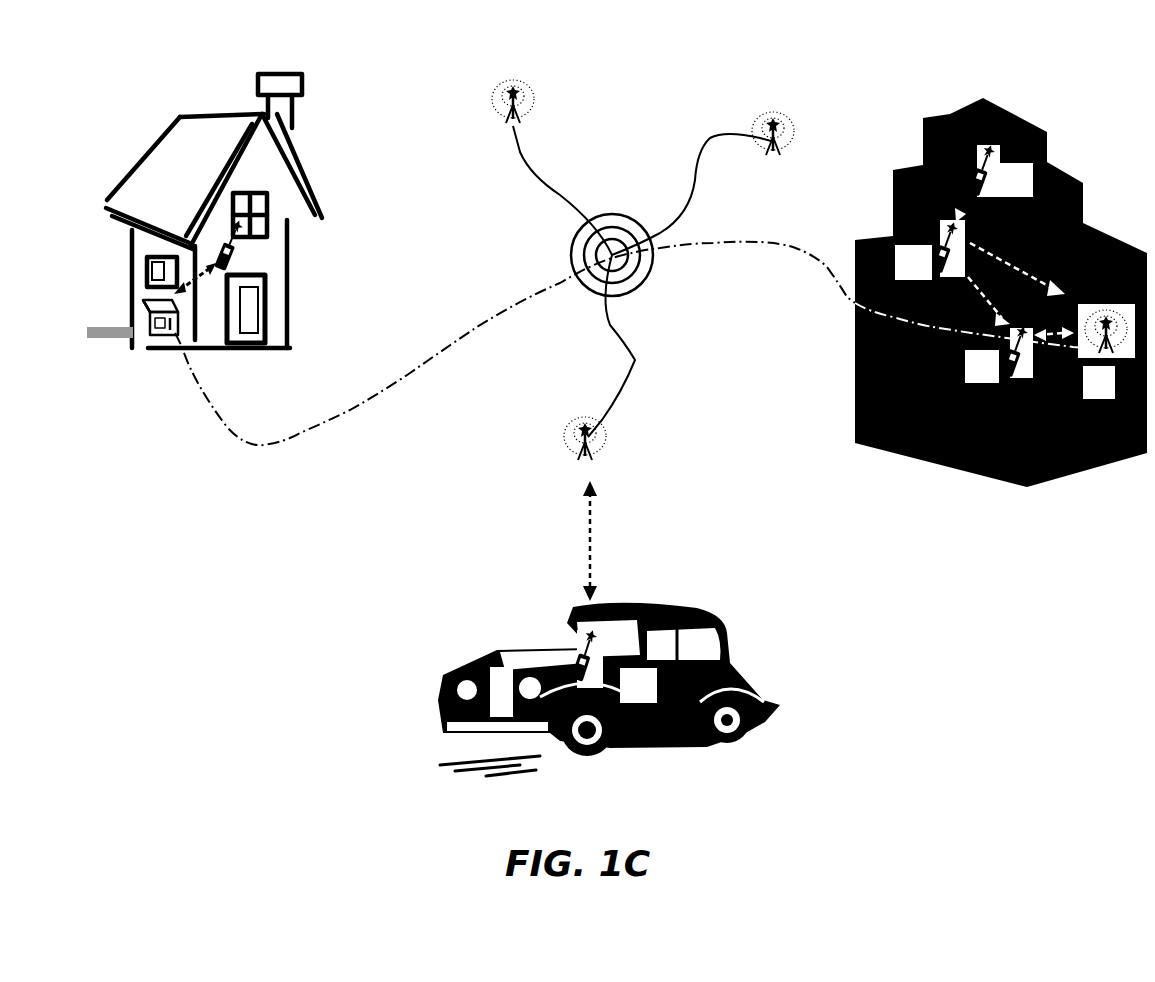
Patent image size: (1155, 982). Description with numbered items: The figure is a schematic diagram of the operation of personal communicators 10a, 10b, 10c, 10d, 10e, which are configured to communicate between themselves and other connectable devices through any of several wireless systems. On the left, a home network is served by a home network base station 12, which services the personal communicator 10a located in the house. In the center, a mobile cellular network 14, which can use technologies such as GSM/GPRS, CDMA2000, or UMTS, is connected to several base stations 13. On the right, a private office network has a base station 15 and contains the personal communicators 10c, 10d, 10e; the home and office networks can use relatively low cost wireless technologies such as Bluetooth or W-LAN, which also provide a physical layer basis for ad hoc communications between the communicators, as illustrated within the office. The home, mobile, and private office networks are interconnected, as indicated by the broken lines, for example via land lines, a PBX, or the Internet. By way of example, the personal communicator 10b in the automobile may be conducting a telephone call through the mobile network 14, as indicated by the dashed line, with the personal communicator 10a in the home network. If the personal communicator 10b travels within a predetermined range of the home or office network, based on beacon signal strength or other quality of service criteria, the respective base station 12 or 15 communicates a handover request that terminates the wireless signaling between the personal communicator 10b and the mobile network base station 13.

The personal communicator 10a is at (249, 245).
The personal communicator 10b is at (609, 689).
The personal communicator 10c is at (999, 353).
The personal communicator 10d is at (930, 250).
The personal communicator 10e is at (1002, 170).
The home network base station 12 is at (204, 211).
The mobile network base station 13 is at (633, 270).
The mobile network 14 is at (642, 281).
The private office network base station 15 is at (1001, 292).